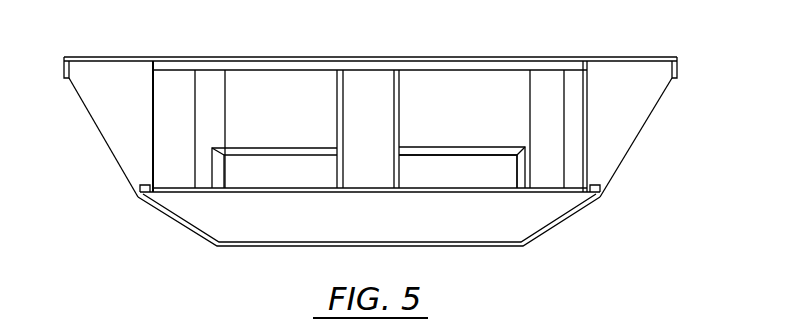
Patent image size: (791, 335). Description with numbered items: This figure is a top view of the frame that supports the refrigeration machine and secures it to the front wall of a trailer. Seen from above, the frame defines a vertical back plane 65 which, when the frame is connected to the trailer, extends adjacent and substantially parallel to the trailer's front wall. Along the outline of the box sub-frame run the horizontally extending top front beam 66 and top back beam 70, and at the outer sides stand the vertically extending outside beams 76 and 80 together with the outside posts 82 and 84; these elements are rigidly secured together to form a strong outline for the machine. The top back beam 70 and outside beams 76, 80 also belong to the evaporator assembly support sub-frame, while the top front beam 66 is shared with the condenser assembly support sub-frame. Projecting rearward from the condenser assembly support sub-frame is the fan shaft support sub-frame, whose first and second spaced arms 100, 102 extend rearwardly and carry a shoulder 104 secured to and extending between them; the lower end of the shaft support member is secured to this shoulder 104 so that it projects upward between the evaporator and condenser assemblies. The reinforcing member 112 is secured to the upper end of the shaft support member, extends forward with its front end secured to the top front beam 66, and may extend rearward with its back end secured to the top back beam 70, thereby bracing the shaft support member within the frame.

The back plane 65 is at (430, 56).
The top back beam 70 is at (276, 62).
The outside beam 76 is at (117, 58).
The outside beam 80 is at (617, 56).
The reinforcing member 112 is at (381, 102).
The first arm 100 is at (225, 172).
The second arm 102 is at (517, 164).
The shoulder 104 is at (440, 147).
The top front beam 66 is at (398, 217).
The outside post 82 is at (141, 185).
The outside post 84 is at (599, 185).